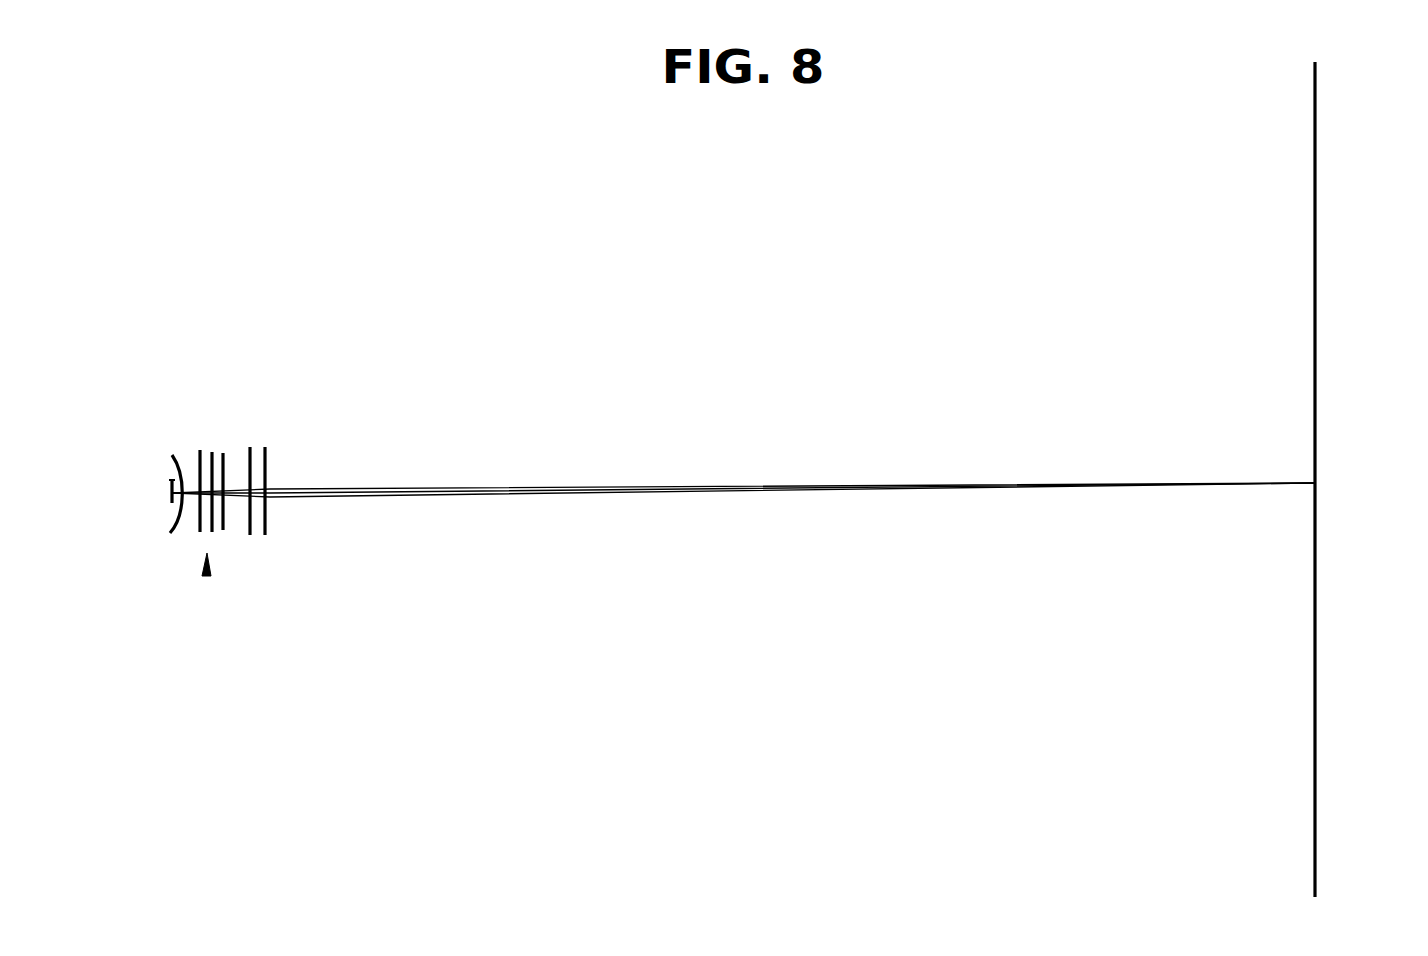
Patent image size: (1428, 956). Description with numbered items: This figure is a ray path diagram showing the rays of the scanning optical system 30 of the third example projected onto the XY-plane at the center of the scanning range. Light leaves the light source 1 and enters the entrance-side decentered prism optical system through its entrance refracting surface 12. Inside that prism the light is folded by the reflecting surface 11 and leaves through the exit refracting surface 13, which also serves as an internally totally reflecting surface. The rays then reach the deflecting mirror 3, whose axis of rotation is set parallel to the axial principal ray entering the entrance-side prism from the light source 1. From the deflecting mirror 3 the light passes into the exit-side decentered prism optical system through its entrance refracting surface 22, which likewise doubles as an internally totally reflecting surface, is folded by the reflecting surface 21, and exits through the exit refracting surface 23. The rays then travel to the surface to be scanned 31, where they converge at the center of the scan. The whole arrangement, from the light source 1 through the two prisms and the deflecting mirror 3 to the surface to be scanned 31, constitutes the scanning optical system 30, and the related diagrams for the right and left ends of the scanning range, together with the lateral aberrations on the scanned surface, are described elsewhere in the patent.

The light source 1 is at (172, 493).
The entrance refracting surface 12 is at (172, 486).
The exit refracting surface 13 is at (172, 455).
The reflecting surface 11 is at (200, 452).
The deflecting mirror 3 is at (211, 451).
The reflecting surface 21 is at (224, 452).
The entrance refracting surface 22 is at (252, 447).
The exit refracting surface 23 is at (266, 455).
The scanning optical system 30 is at (206, 575).
The surface to be scanned 31 is at (1316, 285).